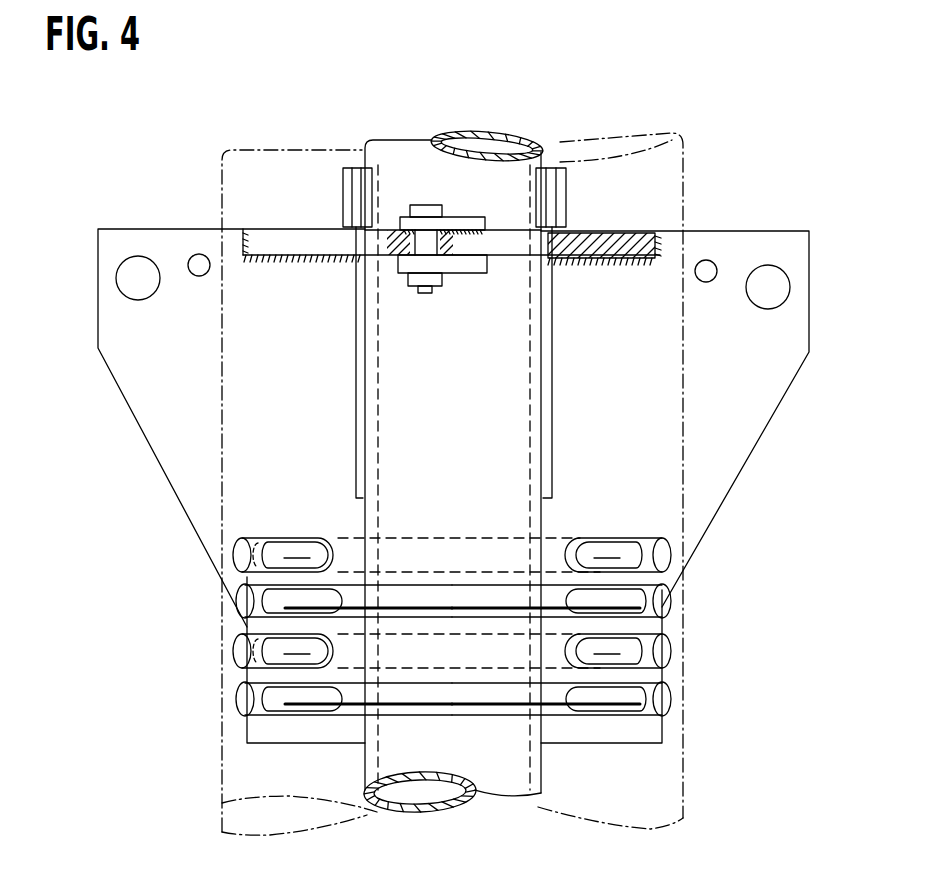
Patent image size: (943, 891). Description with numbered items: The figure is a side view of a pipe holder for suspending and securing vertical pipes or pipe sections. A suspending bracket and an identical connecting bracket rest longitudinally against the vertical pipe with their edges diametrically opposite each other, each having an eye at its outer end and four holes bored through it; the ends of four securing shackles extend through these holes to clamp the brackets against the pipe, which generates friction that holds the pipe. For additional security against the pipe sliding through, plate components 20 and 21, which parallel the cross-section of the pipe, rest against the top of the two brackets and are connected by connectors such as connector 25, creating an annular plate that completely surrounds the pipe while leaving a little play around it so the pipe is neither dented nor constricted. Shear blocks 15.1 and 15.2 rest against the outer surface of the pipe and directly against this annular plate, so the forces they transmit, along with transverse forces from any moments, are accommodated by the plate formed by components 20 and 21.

The plate component 20 is at (290, 240).
The plate component 21 is at (630, 235).
The connector 25 is at (450, 217).
The shear block 15.1 is at (354, 168).
The shear block 15.2 is at (550, 168).